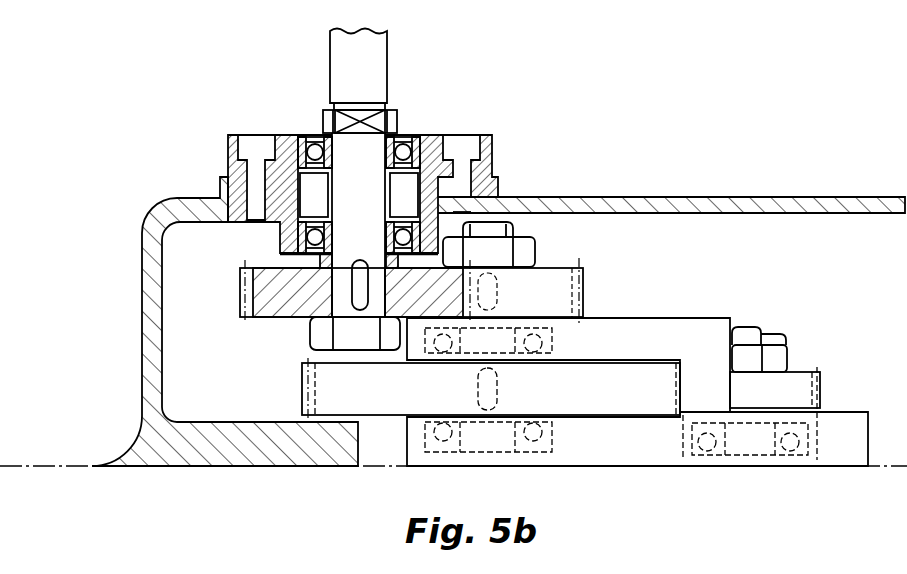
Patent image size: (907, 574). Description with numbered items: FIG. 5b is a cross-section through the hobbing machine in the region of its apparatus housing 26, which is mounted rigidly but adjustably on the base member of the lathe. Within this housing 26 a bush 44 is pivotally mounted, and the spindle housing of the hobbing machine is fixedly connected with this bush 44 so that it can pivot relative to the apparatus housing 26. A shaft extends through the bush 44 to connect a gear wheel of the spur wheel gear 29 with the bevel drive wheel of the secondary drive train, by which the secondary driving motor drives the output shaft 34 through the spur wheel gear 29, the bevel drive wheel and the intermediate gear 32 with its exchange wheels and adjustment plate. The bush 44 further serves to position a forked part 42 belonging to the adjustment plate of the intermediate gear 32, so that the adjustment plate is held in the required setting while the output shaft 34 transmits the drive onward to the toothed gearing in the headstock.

The apparatus housing 26 is at (787, 207).
The spur wheel gear 29 is at (814, 342).
The intermediate gear 32 is at (605, 240).
The output shaft 34 is at (378, 45).
The forked part 42 is at (676, 337).
The bush 44 is at (813, 443).